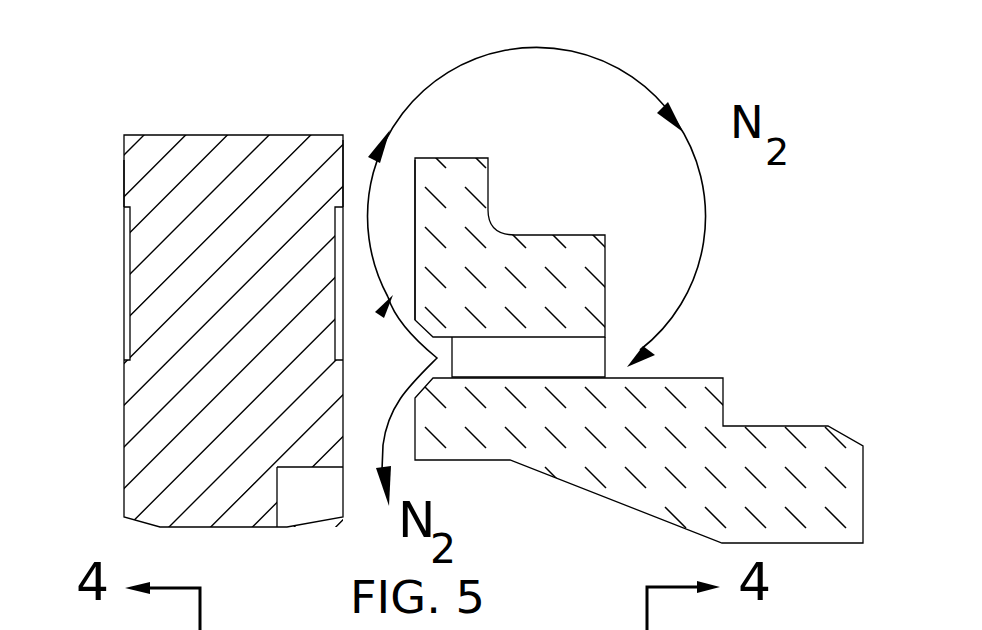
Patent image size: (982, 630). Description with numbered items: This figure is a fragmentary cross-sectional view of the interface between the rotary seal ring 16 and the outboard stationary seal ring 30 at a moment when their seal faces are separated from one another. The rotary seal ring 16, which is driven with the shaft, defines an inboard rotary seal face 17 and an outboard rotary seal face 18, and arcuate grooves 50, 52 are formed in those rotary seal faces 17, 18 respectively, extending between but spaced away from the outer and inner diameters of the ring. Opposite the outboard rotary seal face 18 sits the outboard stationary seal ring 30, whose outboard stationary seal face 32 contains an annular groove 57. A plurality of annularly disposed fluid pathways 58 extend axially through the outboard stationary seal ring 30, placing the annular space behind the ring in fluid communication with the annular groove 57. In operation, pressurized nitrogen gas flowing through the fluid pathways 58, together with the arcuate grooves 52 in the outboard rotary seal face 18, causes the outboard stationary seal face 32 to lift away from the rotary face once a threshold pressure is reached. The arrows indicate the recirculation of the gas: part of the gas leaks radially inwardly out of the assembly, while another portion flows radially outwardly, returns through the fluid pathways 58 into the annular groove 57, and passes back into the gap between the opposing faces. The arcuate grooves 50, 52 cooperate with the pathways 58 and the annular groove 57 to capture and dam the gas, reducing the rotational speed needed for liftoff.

The rotary seal ring 16 is at (143, 398).
The inboard rotary seal face 17 is at (124, 181).
The outboard rotary seal face 18 is at (343, 150).
The arcuate grooves 50 is at (140, 278).
The arcuate grooves 52 is at (333, 280).
The outboard stationary seal ring 30 is at (488, 178).
The outboard stationary seal face 32 is at (414, 172).
The annular groove 57 is at (428, 358).
The fluid pathways 58 is at (590, 348).